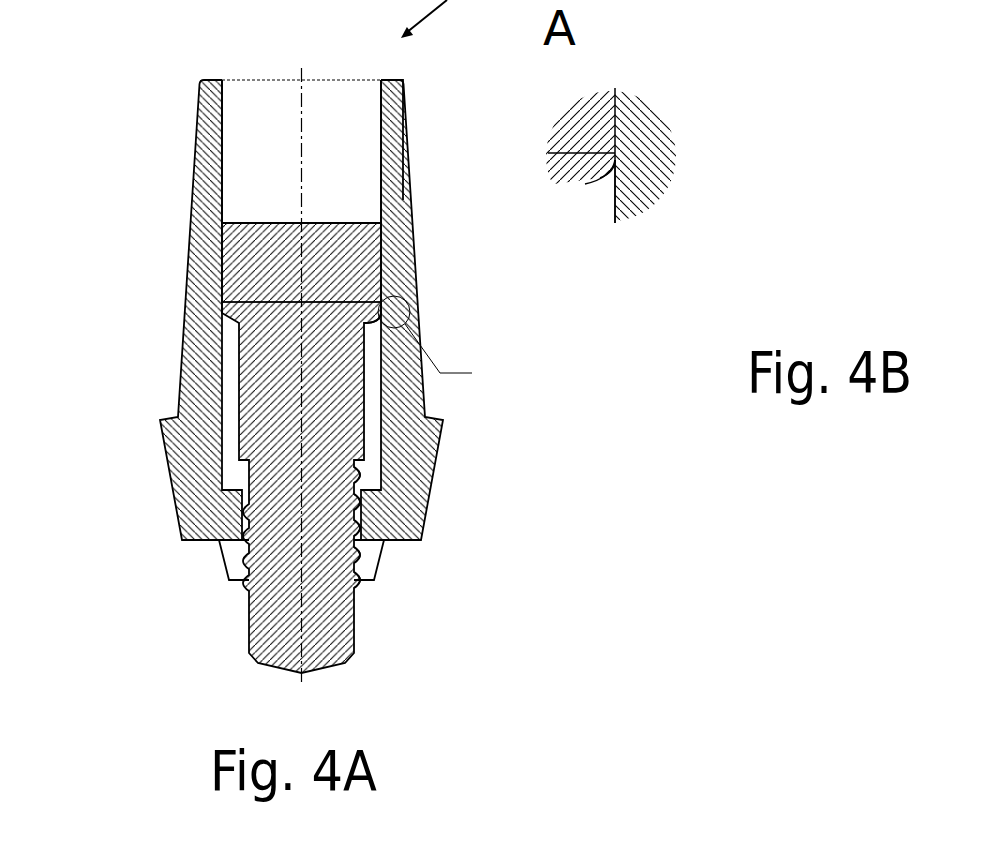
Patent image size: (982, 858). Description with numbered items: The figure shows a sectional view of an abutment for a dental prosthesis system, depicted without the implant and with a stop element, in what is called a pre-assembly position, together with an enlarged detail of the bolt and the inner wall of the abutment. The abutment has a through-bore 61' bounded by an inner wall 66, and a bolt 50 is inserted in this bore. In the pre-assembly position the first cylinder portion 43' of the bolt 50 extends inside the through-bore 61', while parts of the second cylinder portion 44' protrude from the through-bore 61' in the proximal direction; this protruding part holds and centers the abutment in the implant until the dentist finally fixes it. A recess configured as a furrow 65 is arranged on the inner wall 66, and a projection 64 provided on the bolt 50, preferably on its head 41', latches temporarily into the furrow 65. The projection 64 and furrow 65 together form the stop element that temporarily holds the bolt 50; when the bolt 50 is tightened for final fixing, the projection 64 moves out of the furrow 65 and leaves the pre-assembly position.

In FIG. 4A, the head 41' is at (229, 330).
In FIG. 4B, the head 41' is at (716, 129).
In FIG. 4A, the first cylinder portion 43' is at (198, 487).
In FIG. 4A, the second cylinder portion 44' is at (479, 487).
In FIG. 4A, the bolt 50 is at (368, 264).
In FIG. 4B, the bolt 50 is at (603, 110).
In FIG. 4A, the through-bore 61' is at (224, 126).
In FIG. 4A, the projection 64 is at (385, 307).
In FIG. 4B, the projection 64 is at (734, 141).
In FIG. 4B, the furrow 65 is at (618, 157).
In FIG. 4A, the inner wall 66 is at (377, 148).
In FIG. 4B, the inner wall 66 is at (613, 203).